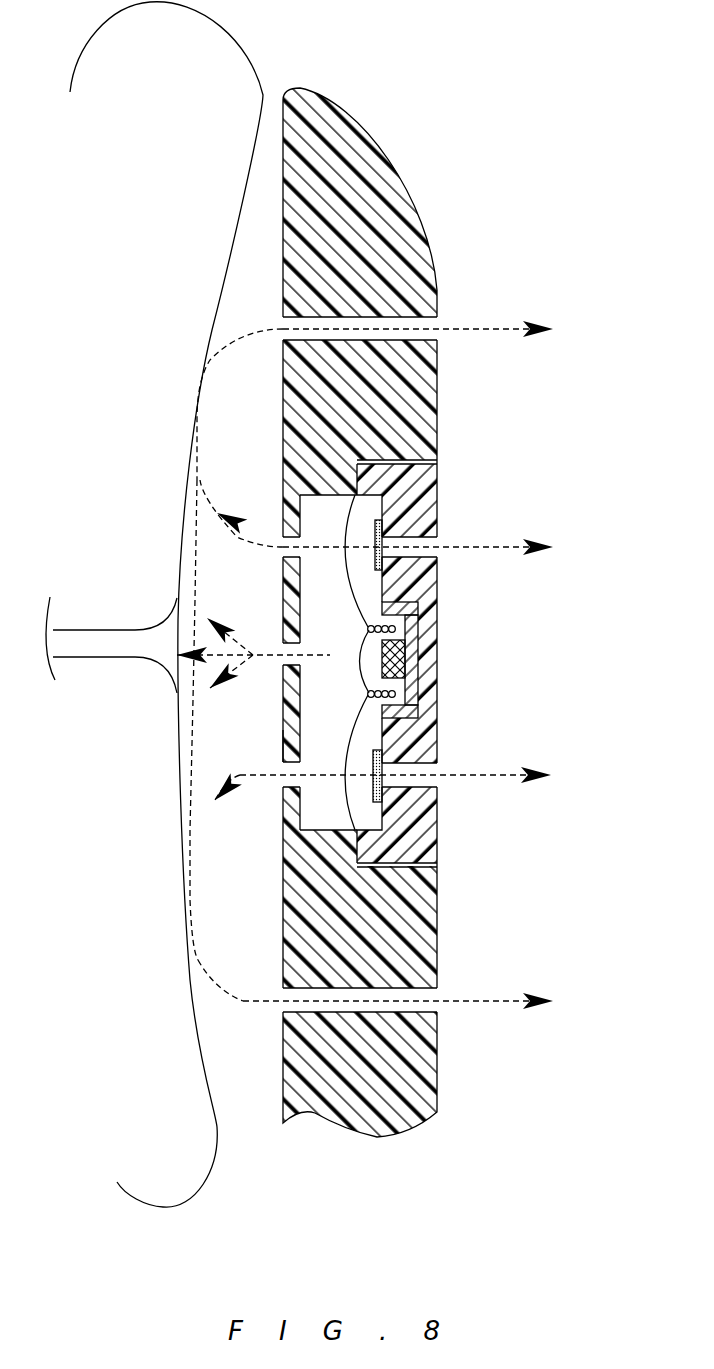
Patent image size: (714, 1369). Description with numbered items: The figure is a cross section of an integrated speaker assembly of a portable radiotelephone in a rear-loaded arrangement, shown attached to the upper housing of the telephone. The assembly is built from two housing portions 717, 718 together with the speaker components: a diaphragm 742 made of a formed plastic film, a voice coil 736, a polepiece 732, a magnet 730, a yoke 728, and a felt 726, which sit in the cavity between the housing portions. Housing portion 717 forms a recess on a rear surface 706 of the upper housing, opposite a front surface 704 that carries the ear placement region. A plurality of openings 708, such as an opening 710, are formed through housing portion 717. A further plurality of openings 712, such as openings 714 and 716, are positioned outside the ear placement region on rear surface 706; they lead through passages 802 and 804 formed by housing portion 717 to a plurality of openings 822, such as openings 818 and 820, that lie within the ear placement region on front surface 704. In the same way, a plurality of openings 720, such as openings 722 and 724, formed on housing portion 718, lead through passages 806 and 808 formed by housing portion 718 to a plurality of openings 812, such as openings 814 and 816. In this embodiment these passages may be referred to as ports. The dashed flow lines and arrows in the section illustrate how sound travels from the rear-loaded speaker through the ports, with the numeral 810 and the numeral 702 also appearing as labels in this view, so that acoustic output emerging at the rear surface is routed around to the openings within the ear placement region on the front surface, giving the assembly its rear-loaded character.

The housing body 702 is at (398, 1137).
The front surface 704 is at (280, 1085).
The rear surface 706 is at (422, 218).
The plurality of openings 708 is at (247, 697).
The opening 710 is at (282, 768).
The plurality of openings 712 is at (505, 1035).
The opening 714 is at (438, 320).
The opening 716 is at (438, 1012).
The housing portion 717 is at (437, 902).
The housing portion 718 is at (436, 473).
The plurality of openings 720 is at (540, 707).
The opening 722 is at (438, 552).
The opening 724 is at (438, 767).
The felt 726 is at (343, 750).
The yoke 728 is at (403, 610).
The magnet 730 is at (398, 657).
The polepiece 732 is at (400, 673).
The voice coil 736 is at (365, 658).
The diaphragm 742 is at (345, 577).
The passage 802 is at (423, 334).
The passage 804 is at (422, 997).
The passage 806 is at (438, 782).
The passage 808 is at (420, 540).
The flow path 810 is at (282, 778).
The plurality of openings 812 is at (368, 552).
The opening 814 is at (335, 826).
The opening 816 is at (378, 533).
The opening 818 is at (282, 993).
The opening 820 is at (280, 320).
The plurality of openings 822 is at (272, 343).